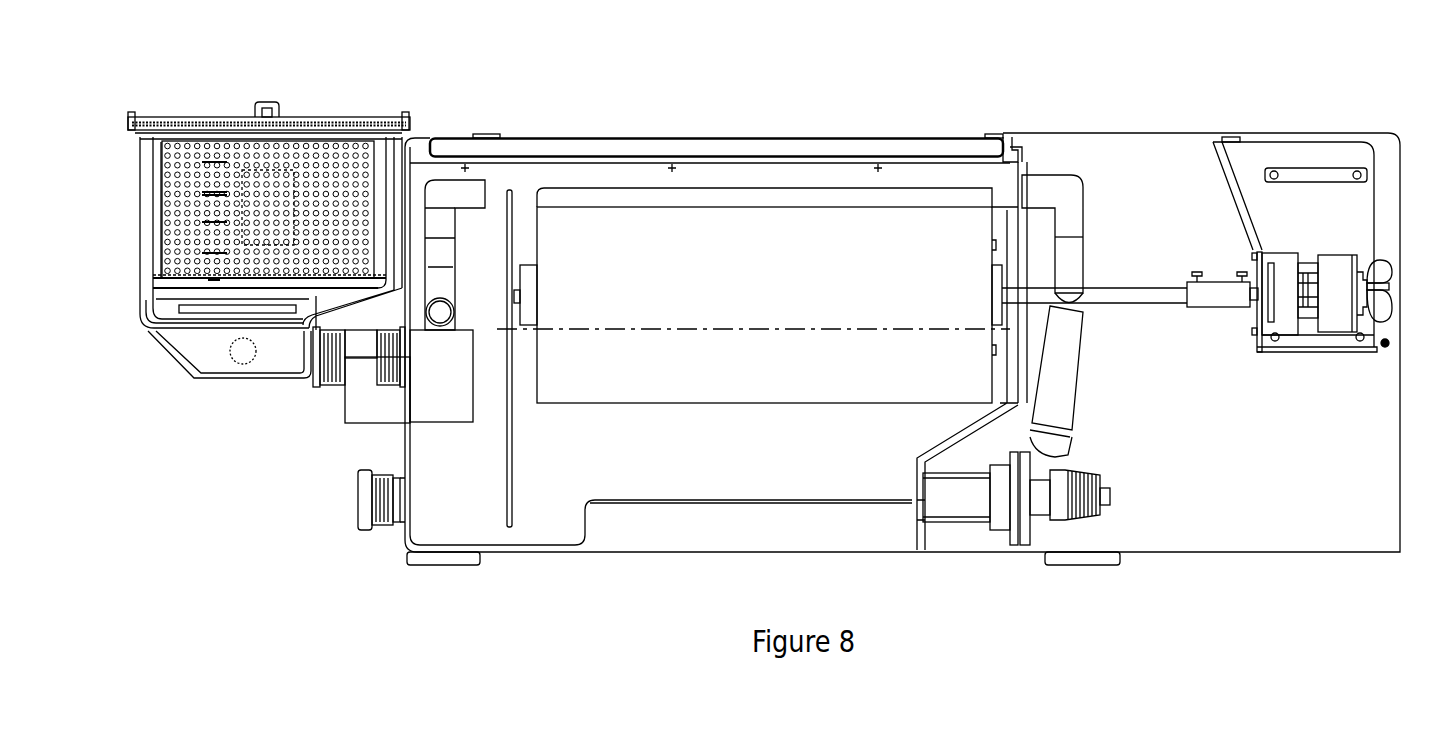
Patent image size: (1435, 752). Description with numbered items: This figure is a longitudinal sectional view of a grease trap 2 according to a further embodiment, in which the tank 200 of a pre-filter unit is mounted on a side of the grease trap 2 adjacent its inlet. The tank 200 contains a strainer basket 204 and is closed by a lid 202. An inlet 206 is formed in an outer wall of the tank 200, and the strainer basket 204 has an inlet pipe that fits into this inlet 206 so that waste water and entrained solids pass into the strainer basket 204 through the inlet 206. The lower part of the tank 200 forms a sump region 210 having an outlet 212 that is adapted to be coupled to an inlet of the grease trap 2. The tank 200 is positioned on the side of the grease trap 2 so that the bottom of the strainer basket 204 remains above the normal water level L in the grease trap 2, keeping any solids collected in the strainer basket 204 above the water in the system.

The grease trap 2 is at (1148, 127).
The normal water level L is at (625, 325).
The tank 200 is at (290, 248).
The lid 202 is at (323, 125).
The strainer basket 204 is at (372, 165).
The inlet 206 is at (253, 208).
The sump region 210 is at (220, 363).
The outlet 212 is at (330, 385).